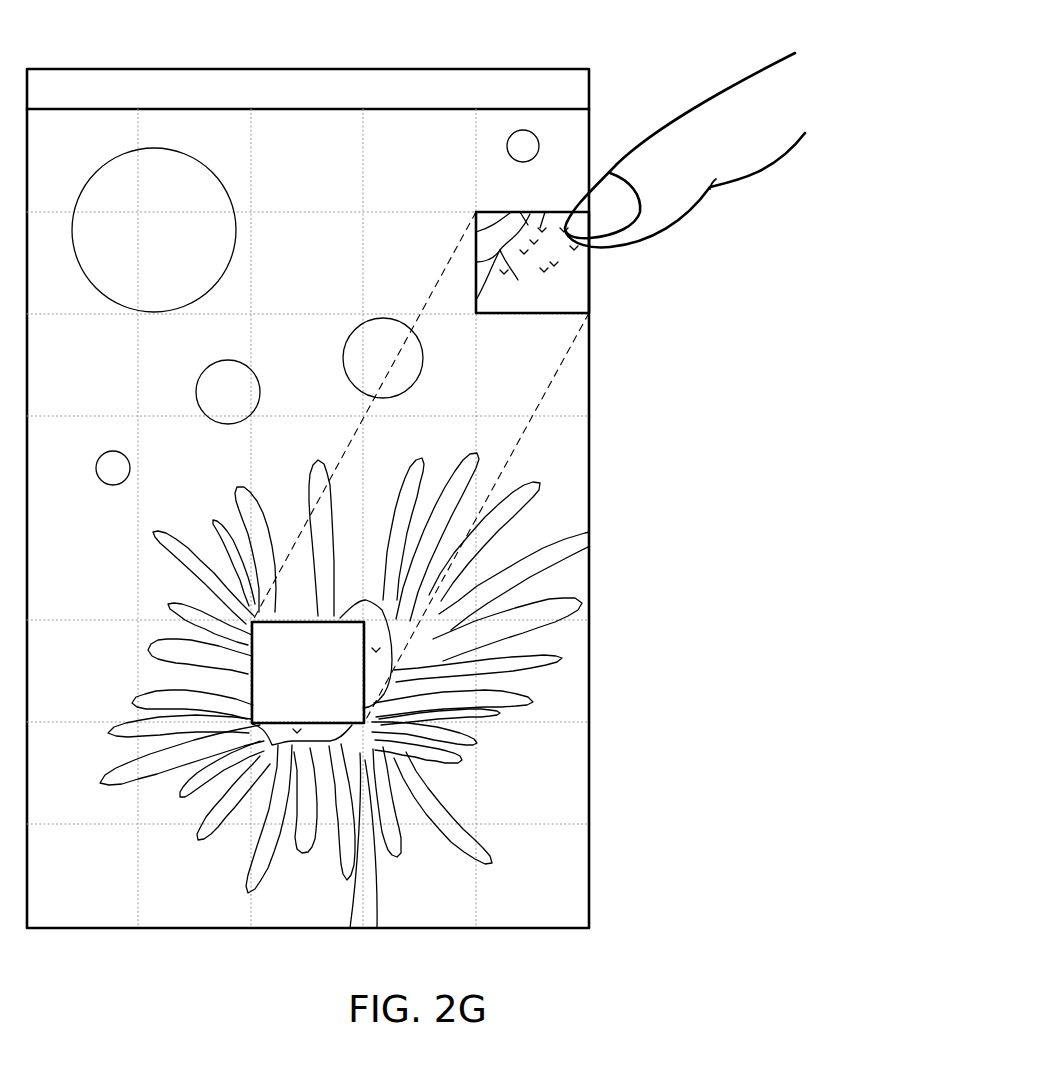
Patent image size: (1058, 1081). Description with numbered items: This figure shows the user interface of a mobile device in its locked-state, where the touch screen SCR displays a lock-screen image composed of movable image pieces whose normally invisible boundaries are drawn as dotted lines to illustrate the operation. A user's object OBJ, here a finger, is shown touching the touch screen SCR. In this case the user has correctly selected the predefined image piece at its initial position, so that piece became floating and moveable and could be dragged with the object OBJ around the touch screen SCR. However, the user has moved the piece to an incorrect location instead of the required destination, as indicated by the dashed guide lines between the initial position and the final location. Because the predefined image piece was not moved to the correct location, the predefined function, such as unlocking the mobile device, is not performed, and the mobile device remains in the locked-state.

The touch screen SCR is at (341, 498).
The object OBJ is at (720, 90).